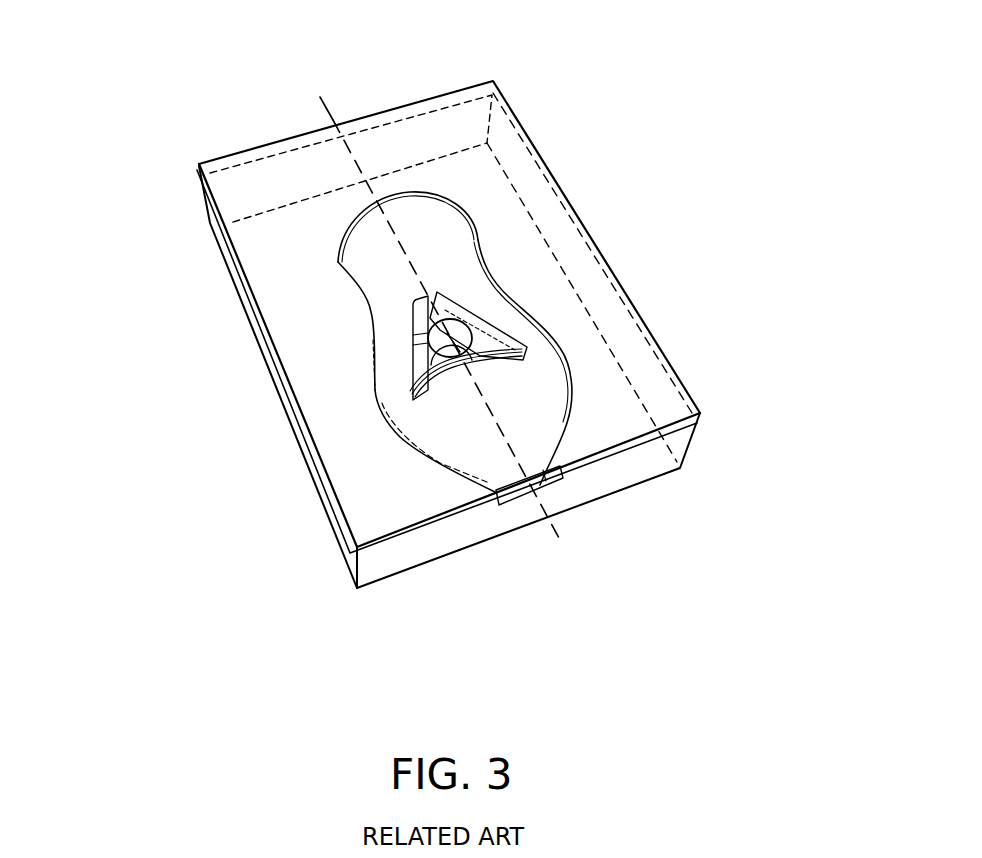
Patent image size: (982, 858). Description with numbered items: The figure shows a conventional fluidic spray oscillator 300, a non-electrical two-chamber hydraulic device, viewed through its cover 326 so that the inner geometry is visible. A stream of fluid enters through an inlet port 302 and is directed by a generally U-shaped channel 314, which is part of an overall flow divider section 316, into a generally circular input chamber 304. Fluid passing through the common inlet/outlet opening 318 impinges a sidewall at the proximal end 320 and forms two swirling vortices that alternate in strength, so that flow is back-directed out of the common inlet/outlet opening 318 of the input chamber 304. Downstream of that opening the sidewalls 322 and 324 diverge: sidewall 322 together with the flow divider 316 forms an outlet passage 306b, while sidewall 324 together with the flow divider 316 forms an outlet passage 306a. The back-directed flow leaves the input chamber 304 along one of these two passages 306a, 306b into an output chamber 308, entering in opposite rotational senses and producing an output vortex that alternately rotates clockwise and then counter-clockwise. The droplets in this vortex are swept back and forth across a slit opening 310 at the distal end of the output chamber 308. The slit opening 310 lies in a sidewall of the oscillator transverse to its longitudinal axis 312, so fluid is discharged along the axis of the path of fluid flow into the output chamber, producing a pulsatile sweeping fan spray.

The fluidic spray oscillator 300 is at (190, 126).
The inlet port 302 is at (576, 315).
The input chamber 304 is at (402, 324).
The outlet passage 306a is at (319, 377).
The outlet passage 306b is at (623, 362).
The output chamber 308 is at (354, 471).
The slit opening 310 is at (607, 506).
The longitudinal axis 312 is at (393, 282).
The U-shaped channel 314 is at (551, 282).
The flow divider section 316 is at (308, 387).
The common inlet/outlet opening 318 is at (516, 233).
The proximal end 320 is at (415, 132).
The sidewall 322 is at (251, 342).
The sidewall 324 is at (585, 353).
The cover 326 is at (533, 377).